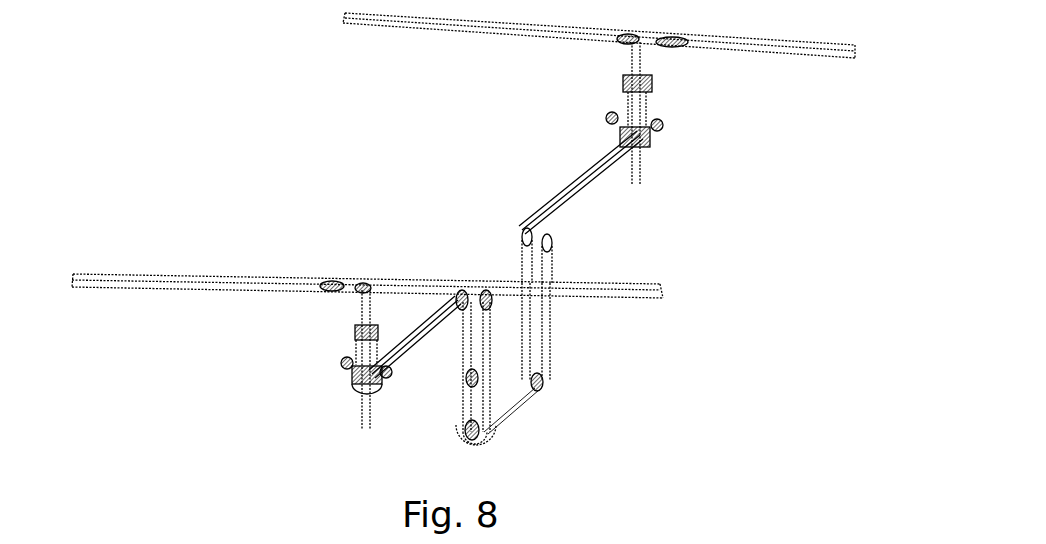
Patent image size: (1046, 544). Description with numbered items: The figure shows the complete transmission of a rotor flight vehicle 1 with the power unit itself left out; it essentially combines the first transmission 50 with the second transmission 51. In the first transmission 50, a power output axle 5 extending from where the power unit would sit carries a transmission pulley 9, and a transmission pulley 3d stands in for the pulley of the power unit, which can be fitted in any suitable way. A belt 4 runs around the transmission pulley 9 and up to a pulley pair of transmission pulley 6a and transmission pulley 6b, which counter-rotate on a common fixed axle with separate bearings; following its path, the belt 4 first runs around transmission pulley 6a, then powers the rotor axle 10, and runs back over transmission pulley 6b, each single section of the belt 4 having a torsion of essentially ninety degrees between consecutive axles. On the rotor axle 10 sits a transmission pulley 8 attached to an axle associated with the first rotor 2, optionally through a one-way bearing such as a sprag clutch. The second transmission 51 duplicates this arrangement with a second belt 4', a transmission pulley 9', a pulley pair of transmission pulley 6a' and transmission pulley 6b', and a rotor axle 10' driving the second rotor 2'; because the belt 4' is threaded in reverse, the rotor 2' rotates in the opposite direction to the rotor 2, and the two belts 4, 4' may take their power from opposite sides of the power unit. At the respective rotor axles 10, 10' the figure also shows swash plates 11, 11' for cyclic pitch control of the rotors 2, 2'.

The rotor flight vehicle 1 is at (292, 177).
The rotor 2 is at (599, 62).
The rotor 2' is at (367, 239).
The rotor axle 10 is at (557, 113).
The rotor axle 10' is at (282, 360).
The swash plate 11 is at (706, 89).
The swash plate 11' is at (315, 369).
The transmission pulley 8 is at (640, 137).
The transmission pulley 6a is at (561, 207).
The transmission pulley 6b is at (601, 258).
The transmission pulley 6a' is at (418, 301).
The transmission pulley 6b' is at (472, 267).
The transmission 50 is at (593, 218).
The second transmission 51 is at (435, 383).
The belt 4 is at (581, 331).
The belt 4' is at (518, 380).
The transmission pulley 9 is at (586, 384).
The transmission pulley 9' is at (440, 453).
The power output axle 5 is at (520, 395).
The transmission pulley 3d is at (493, 400).